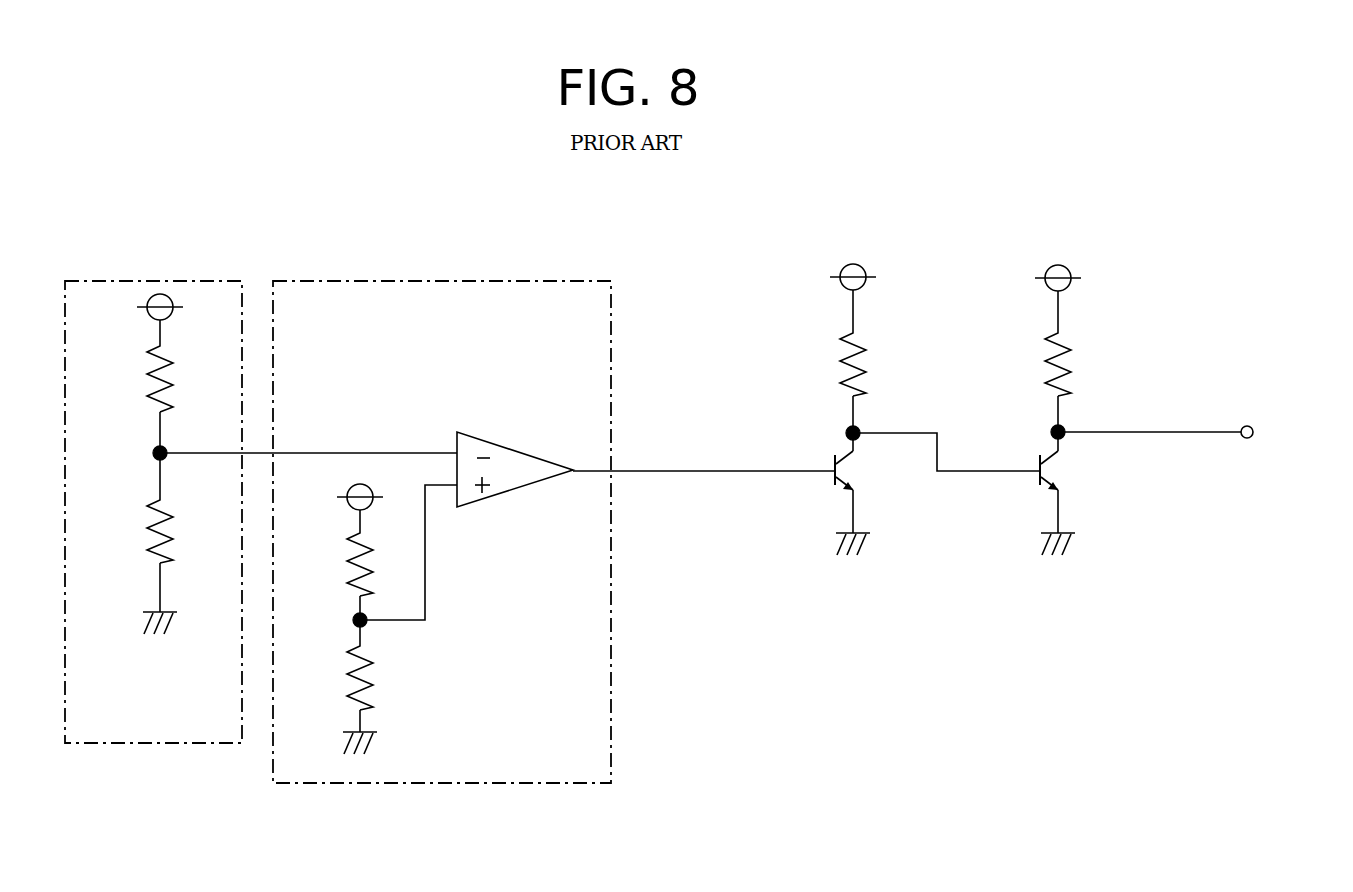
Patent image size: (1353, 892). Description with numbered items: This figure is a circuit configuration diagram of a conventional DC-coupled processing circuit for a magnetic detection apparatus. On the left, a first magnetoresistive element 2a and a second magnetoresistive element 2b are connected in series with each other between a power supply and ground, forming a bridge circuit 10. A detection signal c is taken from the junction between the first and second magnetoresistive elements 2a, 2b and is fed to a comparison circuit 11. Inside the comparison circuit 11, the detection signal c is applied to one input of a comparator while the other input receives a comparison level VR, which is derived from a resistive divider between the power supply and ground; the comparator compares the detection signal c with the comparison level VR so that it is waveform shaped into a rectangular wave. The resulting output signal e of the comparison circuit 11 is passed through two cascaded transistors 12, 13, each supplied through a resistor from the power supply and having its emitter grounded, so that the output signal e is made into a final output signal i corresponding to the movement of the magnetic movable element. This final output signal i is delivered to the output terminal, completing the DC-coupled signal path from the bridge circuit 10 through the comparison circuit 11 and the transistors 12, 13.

The bridge circuit 10 is at (122, 280).
The comparison circuit 11 is at (408, 278).
The first magnetoresistive element 2a is at (143, 377).
The second magnetoresistive element 2b is at (143, 530).
The transistor 12 is at (862, 475).
The transistor 13 is at (1063, 473).
The detection signal c is at (402, 450).
The output signal e is at (642, 471).
The final output signal i is at (1153, 432).
The comparison level VR is at (425, 563).